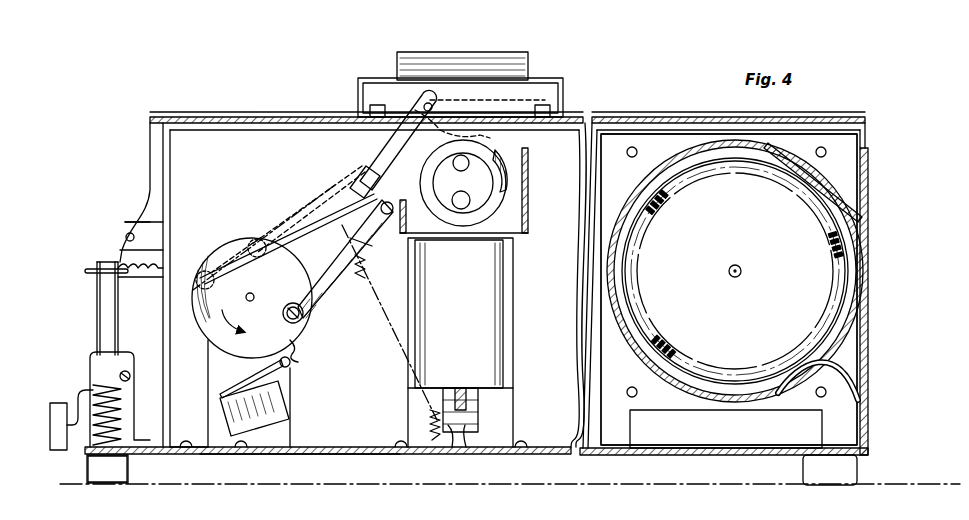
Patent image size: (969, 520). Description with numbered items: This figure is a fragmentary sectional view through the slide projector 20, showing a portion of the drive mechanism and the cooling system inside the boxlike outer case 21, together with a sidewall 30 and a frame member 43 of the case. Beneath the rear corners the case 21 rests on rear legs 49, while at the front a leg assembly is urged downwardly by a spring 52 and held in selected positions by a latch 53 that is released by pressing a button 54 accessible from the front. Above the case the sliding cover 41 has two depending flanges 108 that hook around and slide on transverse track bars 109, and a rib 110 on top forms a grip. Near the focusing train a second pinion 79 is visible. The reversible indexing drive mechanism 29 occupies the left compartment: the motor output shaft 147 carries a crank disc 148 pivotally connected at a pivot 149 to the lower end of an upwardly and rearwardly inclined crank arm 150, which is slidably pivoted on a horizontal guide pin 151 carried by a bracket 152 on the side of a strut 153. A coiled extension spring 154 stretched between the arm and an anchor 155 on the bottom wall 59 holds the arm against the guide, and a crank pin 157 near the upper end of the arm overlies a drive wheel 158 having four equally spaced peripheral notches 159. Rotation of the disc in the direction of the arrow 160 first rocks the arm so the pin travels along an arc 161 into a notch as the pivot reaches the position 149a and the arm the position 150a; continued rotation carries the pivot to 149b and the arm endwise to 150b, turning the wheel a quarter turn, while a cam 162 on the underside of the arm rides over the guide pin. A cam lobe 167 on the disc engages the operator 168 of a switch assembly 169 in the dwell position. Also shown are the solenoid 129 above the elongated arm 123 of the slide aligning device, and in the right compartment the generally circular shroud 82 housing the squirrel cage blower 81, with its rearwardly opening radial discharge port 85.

The slide projector 20 is at (184, 100).
The outer case 21 is at (600, 113).
The reversible indexing drive mechanism 29 is at (268, 206).
The left housing section 30 is at (226, 120).
The sliding cover 41 is at (556, 80).
The inner frame 43 is at (859, 160).
The rear legs 49 is at (802, 468).
The spring 52 is at (86, 441).
The latch 53 is at (90, 360).
The button 54 is at (52, 403).
The bottom wall 59 is at (298, 455).
The second pinion 79 is at (152, 214).
The blower 81 is at (668, 380).
The shroud 82 is at (628, 345).
The radial discharge port 85 is at (850, 366).
The depending flanges 108 is at (356, 95).
The track bars 109 is at (550, 105).
The rib 110 is at (470, 54).
The elongated arm 123 is at (480, 400).
The solenoid 129 is at (514, 280).
The output shaft 147 is at (253, 295).
The crank disc 148 is at (232, 352).
The pivot 149 is at (301, 320).
The pivot position 149a is at (288, 239).
The pivot position 149b is at (252, 240).
The crank arm 150 is at (305, 310).
The crank arm position 150a is at (298, 212).
The crank arm position 150b is at (248, 202).
The guide pin 151 is at (384, 214).
The bracket 152 is at (365, 172).
The strut 153 is at (362, 272).
The coiled extension spring 154 is at (436, 440).
The anchor 155 is at (470, 440).
The crank pin 157 is at (431, 103).
The drive wheel 158 is at (500, 207).
The peripheral notches 159 is at (493, 183).
The arrow 160 is at (245, 320).
The arc 161 is at (487, 99).
The cam 162 is at (390, 168).
The cam lobe 167 is at (300, 358).
The operator 168 is at (292, 383).
The switch assembly 169 is at (278, 406).